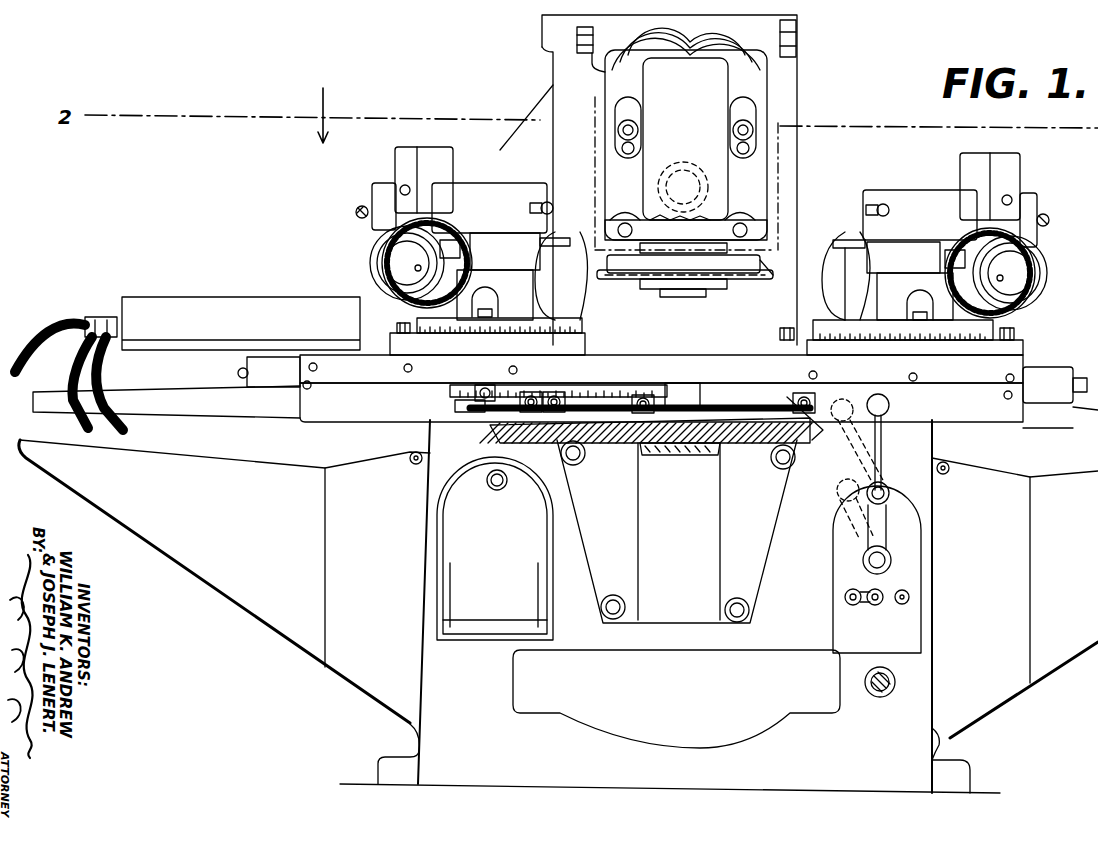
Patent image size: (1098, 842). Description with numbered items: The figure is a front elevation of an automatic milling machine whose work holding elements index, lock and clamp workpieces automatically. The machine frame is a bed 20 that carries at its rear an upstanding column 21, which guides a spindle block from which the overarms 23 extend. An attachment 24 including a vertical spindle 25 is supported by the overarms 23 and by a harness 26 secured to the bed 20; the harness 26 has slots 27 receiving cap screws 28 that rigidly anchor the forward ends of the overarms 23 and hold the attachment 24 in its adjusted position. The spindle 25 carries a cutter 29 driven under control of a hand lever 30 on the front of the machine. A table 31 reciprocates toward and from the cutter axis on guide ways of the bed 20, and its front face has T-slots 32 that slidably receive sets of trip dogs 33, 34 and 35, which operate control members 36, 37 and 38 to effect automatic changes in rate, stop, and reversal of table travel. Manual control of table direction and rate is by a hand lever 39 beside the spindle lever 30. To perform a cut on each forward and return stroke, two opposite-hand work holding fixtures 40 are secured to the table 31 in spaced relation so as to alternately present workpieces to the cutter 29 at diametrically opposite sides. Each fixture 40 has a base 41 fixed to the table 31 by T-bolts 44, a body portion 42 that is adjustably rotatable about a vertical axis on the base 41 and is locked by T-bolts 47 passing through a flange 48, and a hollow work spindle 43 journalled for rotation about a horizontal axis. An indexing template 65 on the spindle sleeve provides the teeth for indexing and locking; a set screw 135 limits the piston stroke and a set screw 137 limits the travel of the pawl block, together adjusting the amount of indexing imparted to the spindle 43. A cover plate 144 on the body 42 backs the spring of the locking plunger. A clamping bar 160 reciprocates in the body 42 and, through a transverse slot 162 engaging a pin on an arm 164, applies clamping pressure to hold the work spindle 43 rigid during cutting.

The bed 20 is at (443, 683).
The column 21 is at (795, 95).
The overarms 23 is at (722, 55).
The attachment 24 is at (768, 235).
The vertical spindle 25 is at (660, 270).
The harness 26 is at (778, 554).
The slots 27 is at (735, 150).
The cap screws 28 is at (735, 130).
The cutter 29 is at (748, 278).
The hand lever 30 is at (877, 530).
The table 31 is at (1022, 378).
The T-slots 32 is at (803, 418).
The trip dogs 33 is at (610, 425).
The trip dogs 34 is at (792, 455).
The trip dogs 35 is at (512, 460).
The control member 36 is at (684, 392).
The control member 37 is at (672, 392).
The control member 38 is at (730, 445).
The hand lever 39 is at (883, 448).
The work holding fixture 40 is at (702, 271).
The base 41 is at (963, 353).
The body portion 42 is at (930, 330).
The hollow work spindle 43 is at (1040, 268).
The T-bolts 44 is at (780, 330).
The T-bolts 47 is at (848, 318).
The flange 48 is at (940, 325).
The template 65 is at (968, 243).
The set screw 135 is at (877, 204).
The set screw 137 is at (1048, 220).
The cover plate 144 is at (1022, 160).
The clamping bar 160 is at (946, 262).
The slot 162 is at (850, 256).
The arm 164 is at (848, 235).